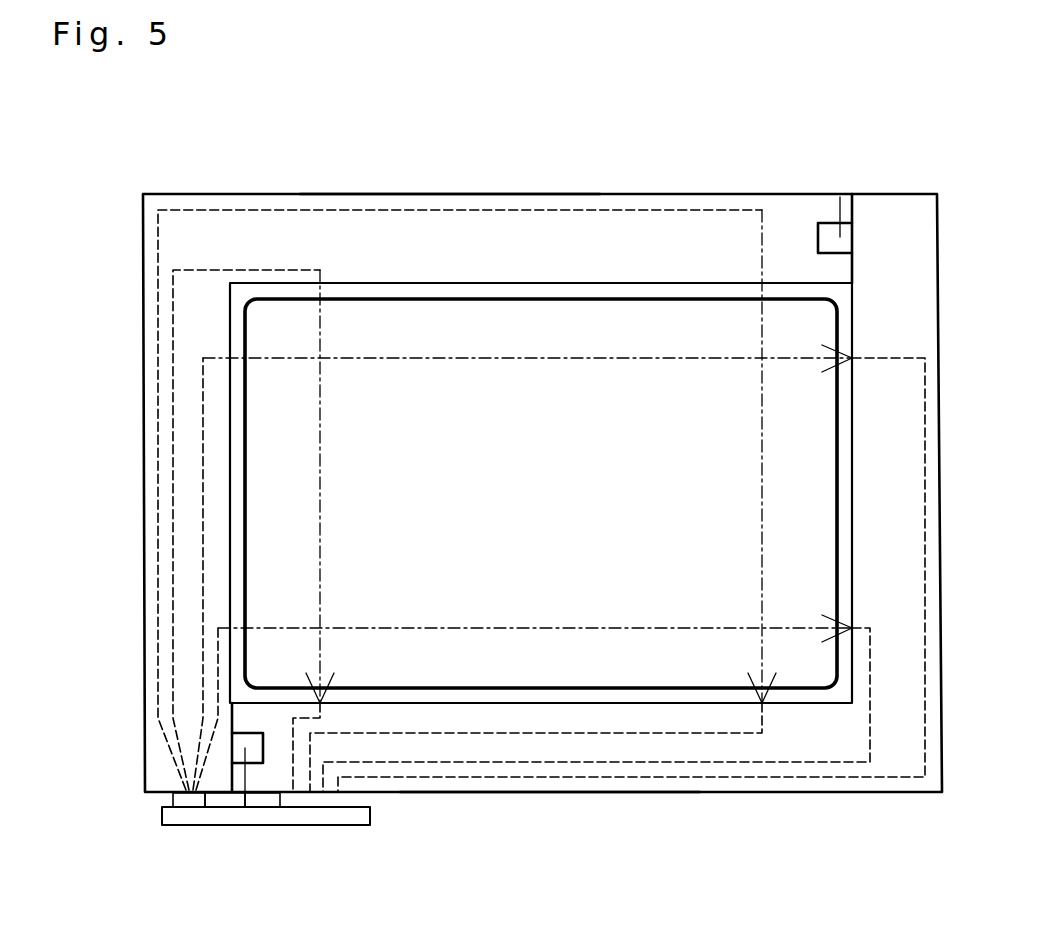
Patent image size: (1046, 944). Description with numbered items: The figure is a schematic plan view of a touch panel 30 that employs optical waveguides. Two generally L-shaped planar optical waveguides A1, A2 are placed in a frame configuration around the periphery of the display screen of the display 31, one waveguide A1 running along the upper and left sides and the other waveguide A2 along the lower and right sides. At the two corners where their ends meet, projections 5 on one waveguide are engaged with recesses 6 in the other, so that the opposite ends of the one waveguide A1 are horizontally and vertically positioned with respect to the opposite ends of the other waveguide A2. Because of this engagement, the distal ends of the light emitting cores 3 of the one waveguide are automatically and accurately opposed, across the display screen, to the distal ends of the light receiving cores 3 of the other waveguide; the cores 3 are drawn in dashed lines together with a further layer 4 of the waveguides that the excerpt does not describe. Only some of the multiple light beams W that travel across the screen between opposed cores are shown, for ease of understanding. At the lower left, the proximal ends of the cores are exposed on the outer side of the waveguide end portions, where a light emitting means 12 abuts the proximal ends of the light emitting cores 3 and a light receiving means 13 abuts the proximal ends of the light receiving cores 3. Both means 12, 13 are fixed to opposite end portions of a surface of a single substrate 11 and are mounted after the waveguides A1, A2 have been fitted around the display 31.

The touch panel 30 is at (183, 174).
The display 31 is at (370, 322).
The light emitting cores / light receiving cores 3 is at (201, 267).
The conductive layer 4 is at (528, 227).
The projection 5 is at (840, 197).
The recess 6 is at (821, 237).
The substrate 11 is at (302, 817).
The light emitting means 12 is at (180, 798).
The light receiving means 13 is at (343, 802).
The light beam W is at (678, 358).
The generally L-shaped planar optical waveguide A1 is at (452, 190).
The generally L-shaped planar optical waveguide A2 is at (563, 797).